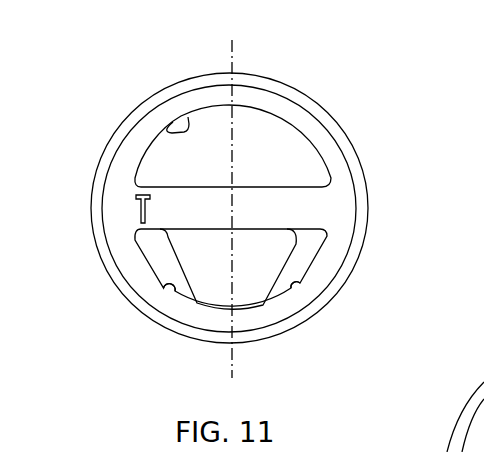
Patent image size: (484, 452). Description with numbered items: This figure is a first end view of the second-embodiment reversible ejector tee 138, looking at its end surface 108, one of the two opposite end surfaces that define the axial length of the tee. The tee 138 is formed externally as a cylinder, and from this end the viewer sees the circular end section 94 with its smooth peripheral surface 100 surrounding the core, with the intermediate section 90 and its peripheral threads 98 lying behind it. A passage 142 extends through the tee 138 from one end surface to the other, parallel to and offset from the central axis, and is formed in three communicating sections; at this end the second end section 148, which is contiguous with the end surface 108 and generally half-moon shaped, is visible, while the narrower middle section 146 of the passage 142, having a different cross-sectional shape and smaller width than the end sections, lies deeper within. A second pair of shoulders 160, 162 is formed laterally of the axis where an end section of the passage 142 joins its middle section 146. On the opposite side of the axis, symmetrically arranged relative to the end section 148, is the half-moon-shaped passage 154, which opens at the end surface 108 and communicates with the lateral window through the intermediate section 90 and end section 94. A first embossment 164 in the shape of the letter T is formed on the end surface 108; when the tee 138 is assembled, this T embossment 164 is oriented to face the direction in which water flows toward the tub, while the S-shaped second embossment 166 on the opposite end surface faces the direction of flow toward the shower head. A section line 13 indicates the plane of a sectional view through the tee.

The section line 13- 13 is at (232, 40).
The intermediate section 90 is at (376, 174).
The end section 94 is at (356, 150).
The threads 98 is at (321, 117).
The smooth peripheral surface 100 is at (327, 288).
The end surface 108 is at (299, 115).
The tee 138 is at (349, 45).
The passage 142 is at (161, 260).
The middle section 146 is at (293, 282).
The second end section 148 is at (162, 291).
The passage 154 is at (165, 132).
The shoulder 160 is at (307, 240).
The shoulder 162 is at (186, 294).
The first embossment 164 is at (137, 200).
The second embossment 166 is at (454, 440).